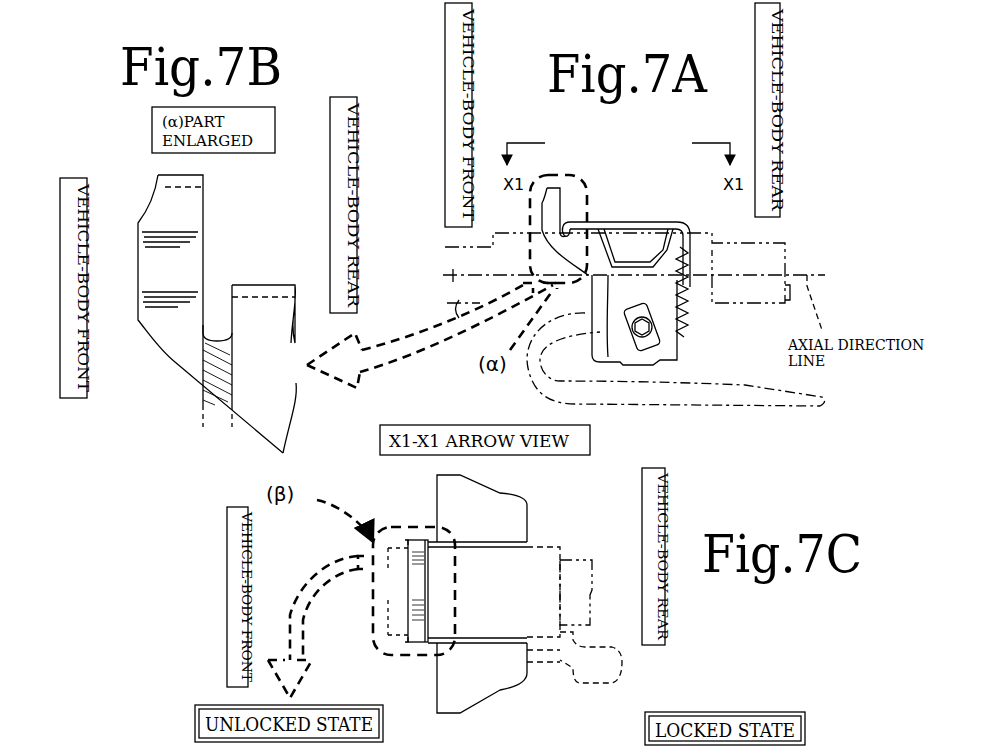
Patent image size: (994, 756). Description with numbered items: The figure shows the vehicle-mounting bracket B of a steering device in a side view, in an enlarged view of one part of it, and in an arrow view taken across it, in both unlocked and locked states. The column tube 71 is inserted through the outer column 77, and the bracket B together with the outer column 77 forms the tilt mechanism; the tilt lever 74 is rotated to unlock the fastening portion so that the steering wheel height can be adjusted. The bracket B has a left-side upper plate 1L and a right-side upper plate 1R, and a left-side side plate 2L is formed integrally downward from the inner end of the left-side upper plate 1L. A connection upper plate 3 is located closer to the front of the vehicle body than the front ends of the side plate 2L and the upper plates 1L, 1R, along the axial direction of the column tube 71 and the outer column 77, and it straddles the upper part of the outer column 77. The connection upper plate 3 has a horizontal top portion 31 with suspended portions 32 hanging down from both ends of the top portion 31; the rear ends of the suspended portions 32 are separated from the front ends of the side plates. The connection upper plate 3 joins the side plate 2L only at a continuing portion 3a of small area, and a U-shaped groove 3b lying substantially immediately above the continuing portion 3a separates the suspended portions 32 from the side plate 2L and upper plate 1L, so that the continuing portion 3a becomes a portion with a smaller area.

In FIG. 7B, the connection upper plate 3 is at (207, 206).
In FIG. 7A, the connection upper plate 3 is at (568, 203).
In FIG. 7C, the connection upper plate 3 is at (406, 588).
In FIG. 7B, the continuing portion 3a is at (232, 428).
In FIG. 7A, the continuing portion 3a is at (586, 272).
In FIG. 7C, the continuing portion 3a is at (430, 538).
In FIG. 7B, the U-shaped groove 3b is at (220, 325).
In FIG. 7A, the U-shaped groove 3b is at (566, 225).
In FIG. 7C, the U-shaped groove 3b is at (430, 550).
In FIG. 7C, the top portion 31 is at (397, 612).
In FIG. 7B, the suspended portion 32 is at (157, 272).
In FIG. 7B, the left-side upper plate 1L is at (263, 285).
In FIG. 7C, the left-side upper plate 1L is at (490, 670).
In FIG. 7C, the right-side upper plate 1R is at (490, 520).
In FIG. 7B, the left-side side plate 2L is at (263, 392).
In FIG. 7A, the left-side side plate 2L is at (665, 294).
In FIG. 7A, the vehicle-mounting bracket B is at (658, 217).
In FIG. 7A, the column tube 71 is at (773, 243).
In FIG. 7C, the column tube 71 is at (587, 560).
In FIG. 7A, the tilt lever 74 is at (755, 410).
In FIG. 7C, the tilt lever 74 is at (620, 666).
In FIG. 7A, the outer column 77 is at (712, 316).
In FIG. 7C, the outer column 77 is at (543, 542).